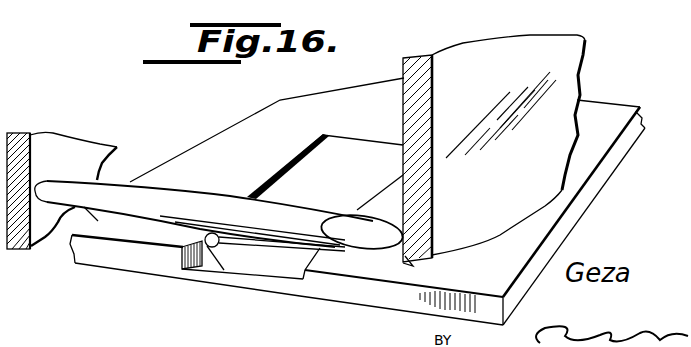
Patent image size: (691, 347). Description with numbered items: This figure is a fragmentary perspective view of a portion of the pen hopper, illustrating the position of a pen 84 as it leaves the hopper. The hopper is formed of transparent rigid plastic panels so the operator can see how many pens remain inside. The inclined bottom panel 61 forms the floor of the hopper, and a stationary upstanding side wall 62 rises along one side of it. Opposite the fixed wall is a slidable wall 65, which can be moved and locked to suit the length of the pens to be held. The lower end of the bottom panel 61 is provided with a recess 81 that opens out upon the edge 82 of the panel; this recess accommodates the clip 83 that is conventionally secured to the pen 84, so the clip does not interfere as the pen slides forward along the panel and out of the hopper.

The bottom panel 61 is at (590, 142).
The stationary upstanding side wall 62 is at (57, 153).
The slidable wall 65 is at (563, 60).
The recess 81 is at (262, 263).
The edge 82 is at (337, 285).
The clip 83 is at (230, 248).
The pen 84 is at (196, 185).